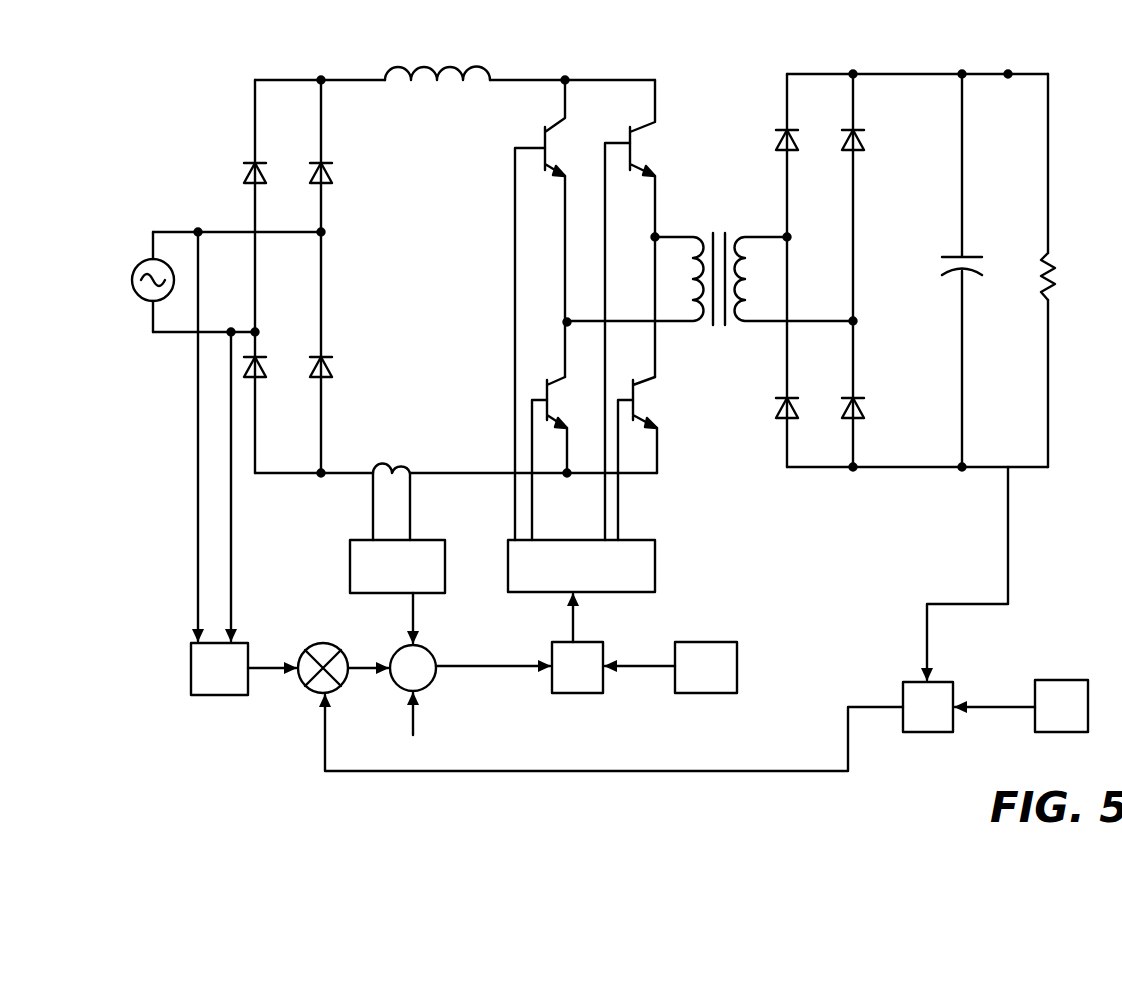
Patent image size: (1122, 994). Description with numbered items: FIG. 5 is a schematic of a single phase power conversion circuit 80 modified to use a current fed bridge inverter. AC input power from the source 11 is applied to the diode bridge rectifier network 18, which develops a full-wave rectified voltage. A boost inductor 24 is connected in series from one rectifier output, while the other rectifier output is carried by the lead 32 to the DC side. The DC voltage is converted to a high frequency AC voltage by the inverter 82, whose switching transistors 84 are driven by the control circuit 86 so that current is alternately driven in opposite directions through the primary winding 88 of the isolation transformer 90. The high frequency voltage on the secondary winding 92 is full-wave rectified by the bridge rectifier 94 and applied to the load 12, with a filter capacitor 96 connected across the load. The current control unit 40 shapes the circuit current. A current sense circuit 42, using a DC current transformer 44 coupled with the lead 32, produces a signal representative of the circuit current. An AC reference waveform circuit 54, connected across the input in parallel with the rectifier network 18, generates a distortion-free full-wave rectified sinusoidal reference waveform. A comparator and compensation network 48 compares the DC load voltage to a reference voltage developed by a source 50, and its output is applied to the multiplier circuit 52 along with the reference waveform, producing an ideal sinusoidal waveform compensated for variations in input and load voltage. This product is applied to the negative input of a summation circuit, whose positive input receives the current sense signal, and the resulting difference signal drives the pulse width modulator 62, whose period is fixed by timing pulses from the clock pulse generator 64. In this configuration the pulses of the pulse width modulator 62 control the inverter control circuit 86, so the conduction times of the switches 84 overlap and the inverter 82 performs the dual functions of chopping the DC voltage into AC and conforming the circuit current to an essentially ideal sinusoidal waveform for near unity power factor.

The source 11 is at (138, 297).
The diode bridge rectifier network 18 is at (298, 280).
The boost inductor 24 is at (490, 74).
The lead 32 is at (468, 476).
The DC current transformer 44 is at (391, 463).
The current sense circuit 42 is at (397, 591).
The inverter 82 is at (629, 309).
The switching transistors 84 is at (628, 123).
The control circuit 86 is at (581, 566).
The isolation transformer 90 is at (710, 257).
The primary winding 88 is at (690, 286).
The secondary winding 92 is at (752, 282).
The power conversion circuit 80 is at (930, 249).
The bridge rectifier 94 is at (812, 157).
The filter capacitor 96 is at (958, 276).
The load 12 is at (1057, 282).
The AC reference waveform circuit 54 is at (243, 463).
The multiplier circuit 52 is at (310, 646).
The pulse width modulator 62 is at (486, 664).
The clock pulse generator 64 is at (671, 667).
The comparator and compensation network 48 is at (955, 599).
The source 50 is at (1021, 706).
The current control unit 40 is at (434, 794).